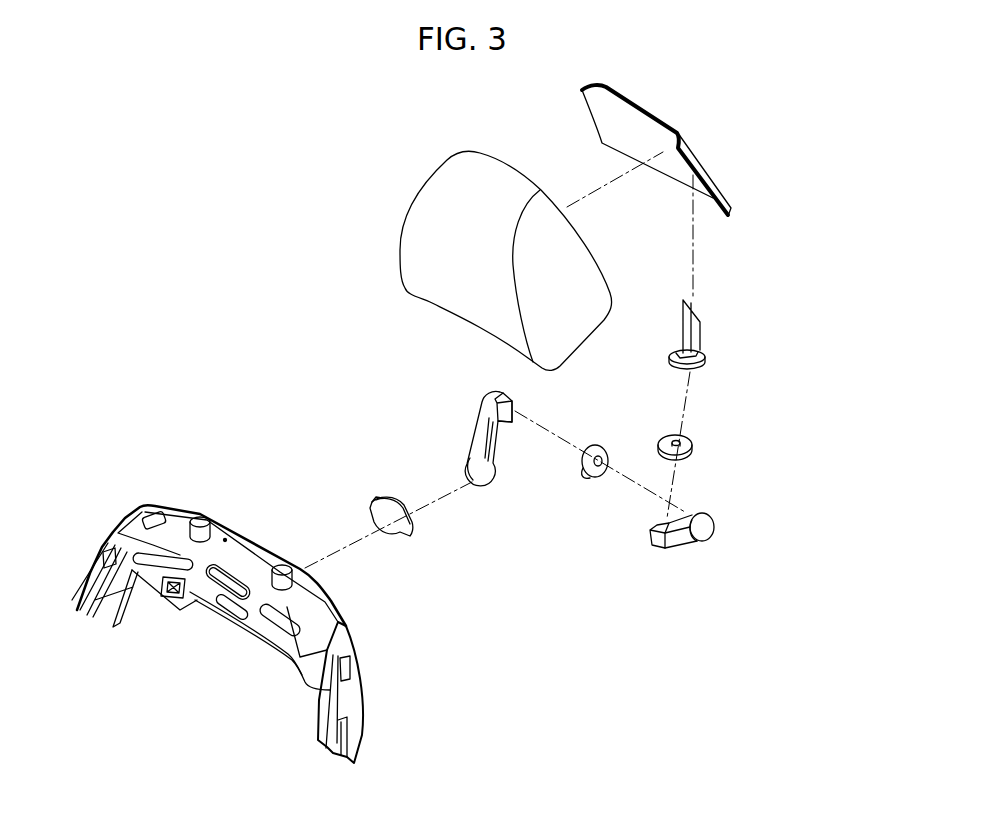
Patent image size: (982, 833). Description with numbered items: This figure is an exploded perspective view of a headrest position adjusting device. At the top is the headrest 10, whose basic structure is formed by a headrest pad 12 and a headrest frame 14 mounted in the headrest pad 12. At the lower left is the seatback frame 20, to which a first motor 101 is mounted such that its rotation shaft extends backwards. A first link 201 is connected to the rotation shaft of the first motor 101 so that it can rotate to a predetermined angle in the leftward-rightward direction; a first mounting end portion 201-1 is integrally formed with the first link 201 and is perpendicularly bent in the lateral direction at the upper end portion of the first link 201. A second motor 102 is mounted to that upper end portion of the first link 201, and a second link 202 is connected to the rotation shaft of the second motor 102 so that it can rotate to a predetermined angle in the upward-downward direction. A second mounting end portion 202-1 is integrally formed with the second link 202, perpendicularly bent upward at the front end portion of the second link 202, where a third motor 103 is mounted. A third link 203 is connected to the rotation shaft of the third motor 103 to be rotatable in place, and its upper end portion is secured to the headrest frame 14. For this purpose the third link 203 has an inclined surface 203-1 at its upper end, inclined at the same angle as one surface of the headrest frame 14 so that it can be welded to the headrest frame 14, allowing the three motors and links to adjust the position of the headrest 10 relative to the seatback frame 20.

The headrest 10 is at (538, 227).
The headrest pad 12 is at (458, 180).
The headrest frame 14 is at (700, 157).
The seatback frame 20 is at (233, 550).
The first motor 101 is at (392, 537).
The second motor 102 is at (595, 478).
The third motor 103 is at (692, 443).
The first link 201 is at (463, 453).
The first mounting end portion 201-1 is at (507, 410).
The second link 202 is at (678, 576).
The second mounting end portion 202-1 is at (655, 537).
The third link 203 is at (760, 327).
The inclined surface 203-1 is at (692, 312).